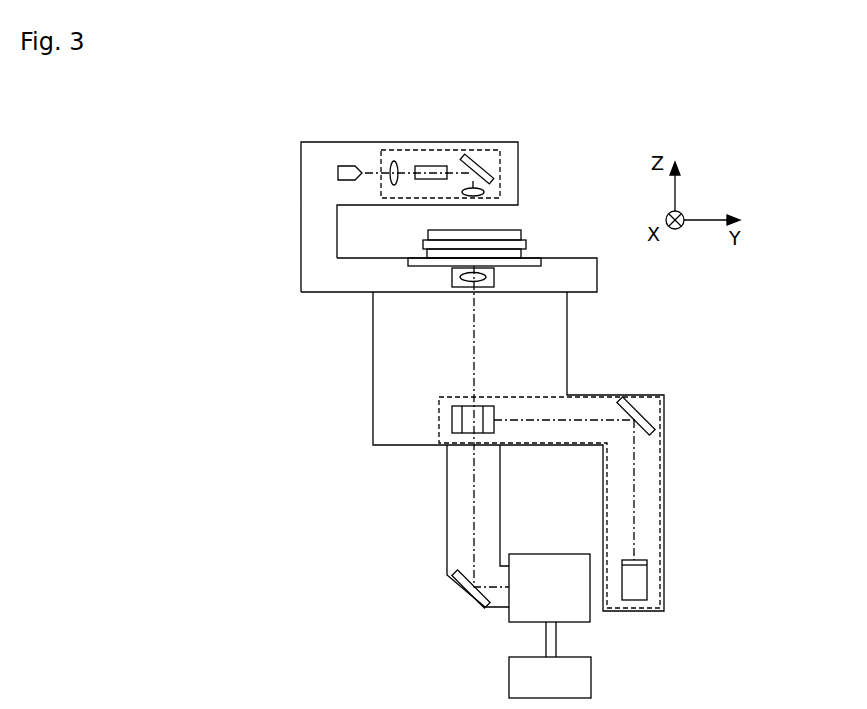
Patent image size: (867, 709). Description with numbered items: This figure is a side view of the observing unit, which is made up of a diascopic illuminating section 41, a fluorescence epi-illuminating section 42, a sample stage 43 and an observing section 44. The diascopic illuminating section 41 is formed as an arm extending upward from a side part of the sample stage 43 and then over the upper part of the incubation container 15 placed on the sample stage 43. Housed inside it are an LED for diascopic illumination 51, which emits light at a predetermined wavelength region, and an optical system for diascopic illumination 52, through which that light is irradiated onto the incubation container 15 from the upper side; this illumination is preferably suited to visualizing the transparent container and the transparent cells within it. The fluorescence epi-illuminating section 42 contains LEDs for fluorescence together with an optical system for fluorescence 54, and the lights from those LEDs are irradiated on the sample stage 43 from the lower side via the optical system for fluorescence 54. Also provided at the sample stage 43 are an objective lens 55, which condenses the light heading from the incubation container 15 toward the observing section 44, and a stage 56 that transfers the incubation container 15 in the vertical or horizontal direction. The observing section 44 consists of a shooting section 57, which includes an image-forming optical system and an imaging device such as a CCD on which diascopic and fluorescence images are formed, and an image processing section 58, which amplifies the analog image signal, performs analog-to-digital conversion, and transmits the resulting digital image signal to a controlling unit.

The incubation container 15 is at (480, 230).
The diascopic illuminating section 41 is at (518, 175).
The fluorescence epi-illuminating section 42 is at (664, 497).
The sample stage 43 is at (597, 275).
The observing section 44 is at (498, 609).
The LED for diascopic illumination 51 is at (349, 165).
The optical system for diascopic illumination 52 is at (428, 150).
The optical system for fluorescence 54 is at (638, 611).
The objective lens 55 is at (476, 288).
The stage 56 is at (520, 266).
The shooting section 57 is at (590, 622).
The image processing section 58 is at (591, 678).